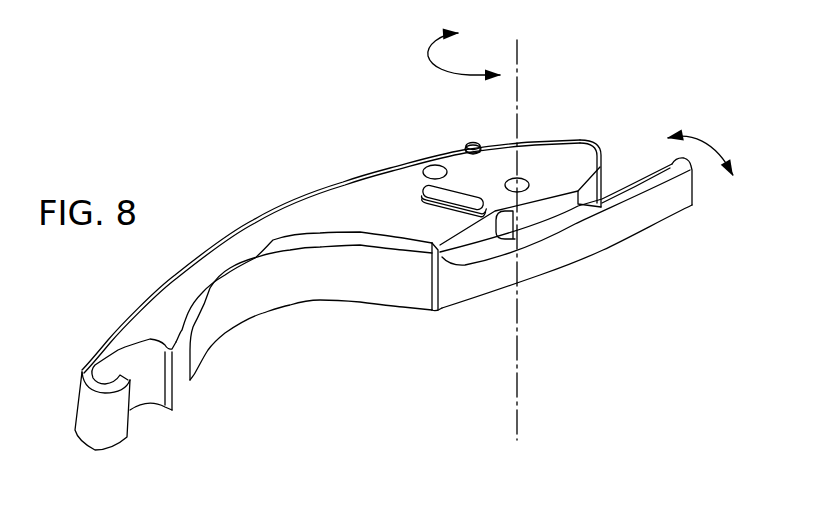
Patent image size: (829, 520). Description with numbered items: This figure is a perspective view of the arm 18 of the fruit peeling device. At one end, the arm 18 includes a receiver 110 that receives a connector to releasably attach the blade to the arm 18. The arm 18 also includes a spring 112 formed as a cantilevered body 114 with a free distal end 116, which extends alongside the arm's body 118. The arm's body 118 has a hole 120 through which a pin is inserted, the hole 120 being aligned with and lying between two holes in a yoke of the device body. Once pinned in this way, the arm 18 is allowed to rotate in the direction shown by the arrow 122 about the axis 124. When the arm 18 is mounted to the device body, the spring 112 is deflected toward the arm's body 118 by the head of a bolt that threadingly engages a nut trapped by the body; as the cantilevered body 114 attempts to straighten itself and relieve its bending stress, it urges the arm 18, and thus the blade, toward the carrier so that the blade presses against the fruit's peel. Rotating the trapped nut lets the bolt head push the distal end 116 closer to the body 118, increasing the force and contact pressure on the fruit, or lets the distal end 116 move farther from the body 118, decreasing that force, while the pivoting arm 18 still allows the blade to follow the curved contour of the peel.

The arm 18 is at (426, 258).
The receiver 110 is at (158, 437).
The spring 112 is at (583, 243).
The cantilevered body 114 is at (572, 266).
The distal end 116 is at (692, 185).
The arm's body 118 is at (343, 182).
The hole 120 is at (527, 182).
The arrow 122 is at (447, 72).
The axis 124 is at (517, 112).